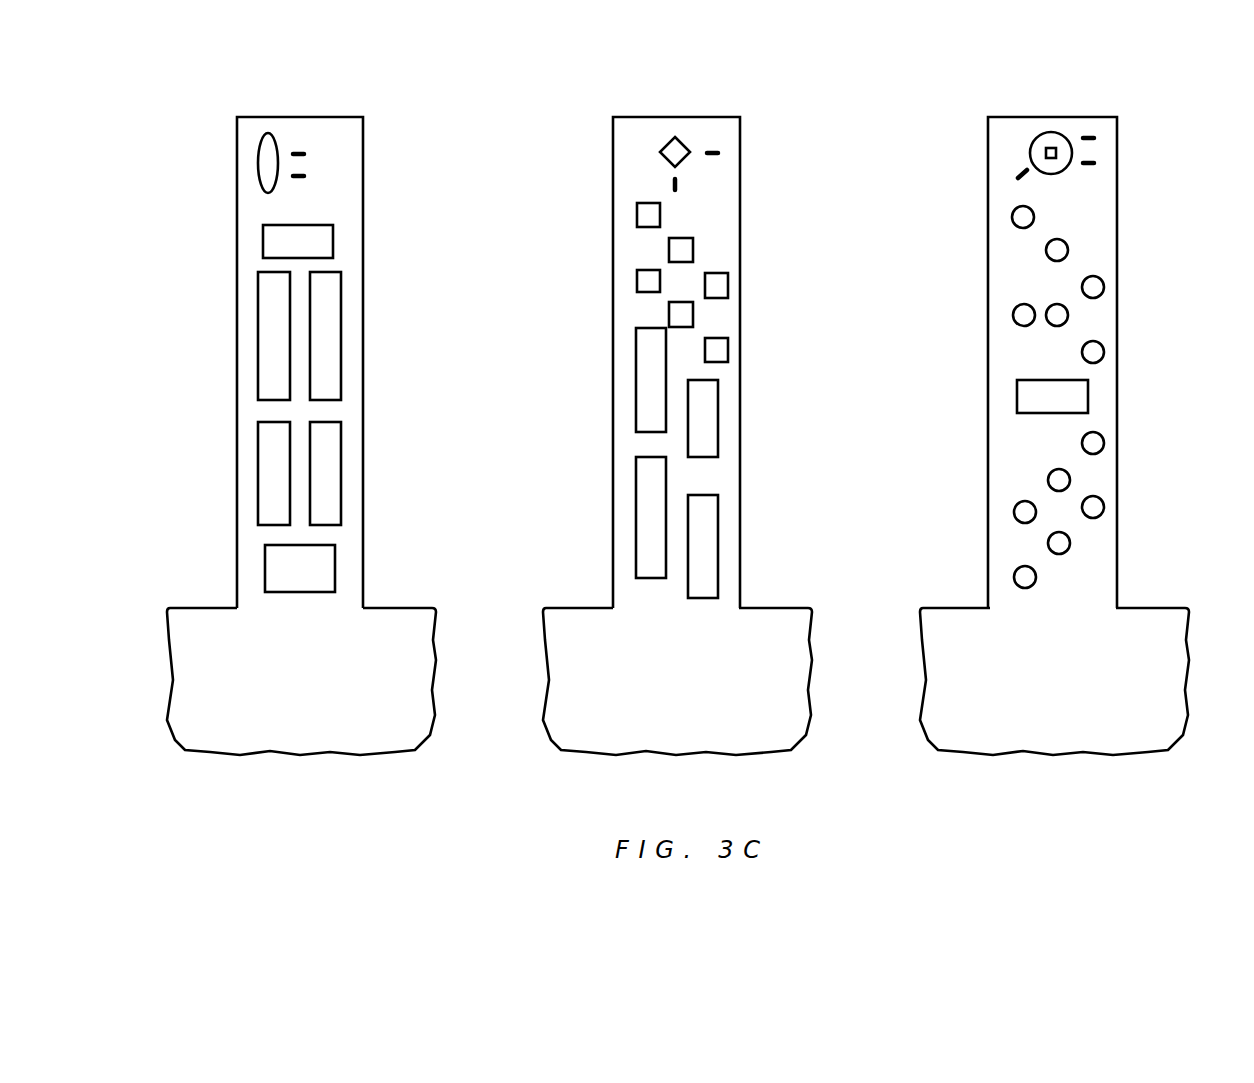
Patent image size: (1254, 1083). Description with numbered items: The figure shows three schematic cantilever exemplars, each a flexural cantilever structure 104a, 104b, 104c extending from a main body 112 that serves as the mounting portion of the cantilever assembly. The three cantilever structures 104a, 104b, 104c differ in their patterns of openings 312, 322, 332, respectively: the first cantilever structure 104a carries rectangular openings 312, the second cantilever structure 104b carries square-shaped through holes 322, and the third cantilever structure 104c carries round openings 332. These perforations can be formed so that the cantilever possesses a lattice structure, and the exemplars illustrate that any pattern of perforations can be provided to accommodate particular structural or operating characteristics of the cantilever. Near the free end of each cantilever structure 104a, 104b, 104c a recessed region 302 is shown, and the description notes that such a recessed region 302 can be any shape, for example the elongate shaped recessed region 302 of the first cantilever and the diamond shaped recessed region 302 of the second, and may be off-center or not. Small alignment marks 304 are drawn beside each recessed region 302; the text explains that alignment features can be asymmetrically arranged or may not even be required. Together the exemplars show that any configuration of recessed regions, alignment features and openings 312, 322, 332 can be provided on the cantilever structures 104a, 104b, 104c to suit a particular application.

The cantilever structure 104a is at (365, 545).
The cantilever structure 104b is at (742, 550).
The cantilever structure 104c is at (1120, 548).
The main body 112 is at (322, 684).
The recessed region 302 is at (262, 148).
The alignment marks 304 is at (305, 175).
The openings 312 is at (263, 233).
The openings 322 is at (637, 215).
The openings 332 is at (1105, 288).